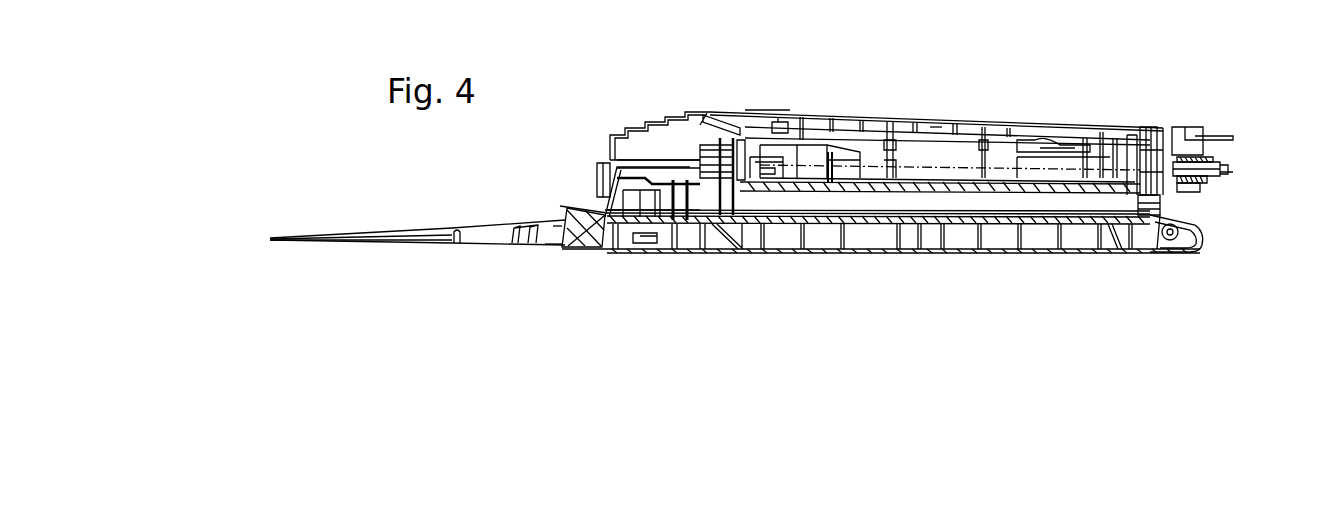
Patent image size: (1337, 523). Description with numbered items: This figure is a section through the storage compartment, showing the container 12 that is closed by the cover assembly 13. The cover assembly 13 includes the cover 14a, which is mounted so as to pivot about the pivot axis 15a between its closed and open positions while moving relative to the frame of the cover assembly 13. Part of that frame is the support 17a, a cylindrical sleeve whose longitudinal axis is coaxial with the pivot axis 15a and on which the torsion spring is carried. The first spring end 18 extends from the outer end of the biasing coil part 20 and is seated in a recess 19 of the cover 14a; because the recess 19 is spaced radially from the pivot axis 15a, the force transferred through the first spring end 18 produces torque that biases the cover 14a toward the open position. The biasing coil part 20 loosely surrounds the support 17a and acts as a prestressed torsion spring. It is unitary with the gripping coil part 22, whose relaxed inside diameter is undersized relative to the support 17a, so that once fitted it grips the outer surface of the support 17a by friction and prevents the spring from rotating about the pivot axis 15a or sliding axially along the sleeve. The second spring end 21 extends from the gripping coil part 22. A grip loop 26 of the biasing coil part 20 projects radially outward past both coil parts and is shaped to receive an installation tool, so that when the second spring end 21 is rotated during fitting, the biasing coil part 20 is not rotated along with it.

The container 12 is at (906, 236).
The cover assembly 13 is at (765, 103).
The cover 14a is at (850, 112).
The pivot axis 15a is at (957, 162).
The support 17a is at (1228, 166).
The first spring end 18 is at (1153, 238).
The recess 19 is at (1133, 199).
The biasing coil part 20 is at (1183, 150).
The second spring end 21 is at (1215, 187).
The gripping coil part 22 is at (1220, 154).
The grip loop 26 is at (1207, 156).